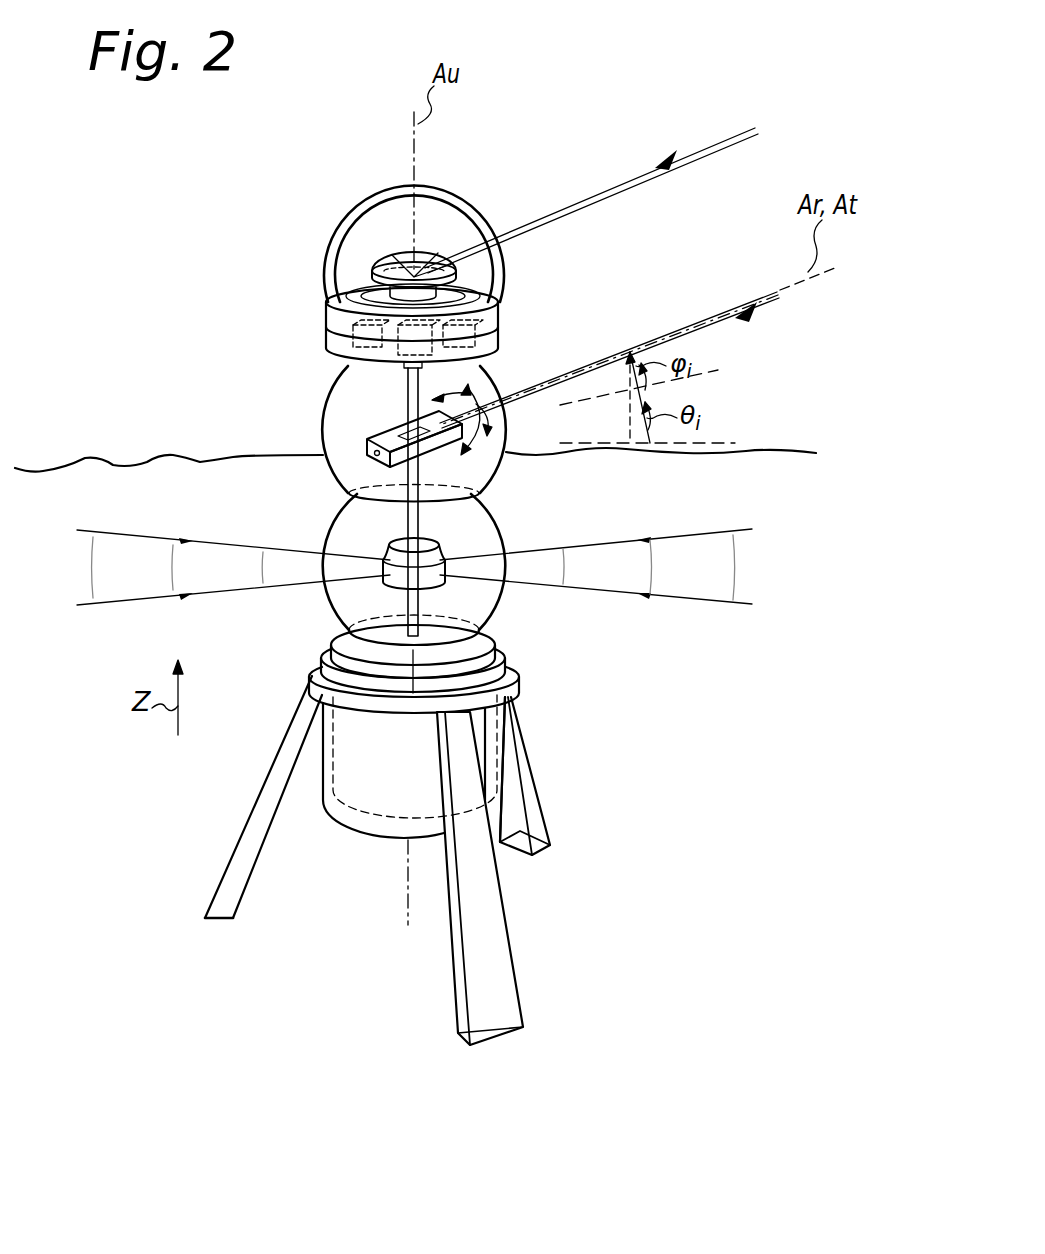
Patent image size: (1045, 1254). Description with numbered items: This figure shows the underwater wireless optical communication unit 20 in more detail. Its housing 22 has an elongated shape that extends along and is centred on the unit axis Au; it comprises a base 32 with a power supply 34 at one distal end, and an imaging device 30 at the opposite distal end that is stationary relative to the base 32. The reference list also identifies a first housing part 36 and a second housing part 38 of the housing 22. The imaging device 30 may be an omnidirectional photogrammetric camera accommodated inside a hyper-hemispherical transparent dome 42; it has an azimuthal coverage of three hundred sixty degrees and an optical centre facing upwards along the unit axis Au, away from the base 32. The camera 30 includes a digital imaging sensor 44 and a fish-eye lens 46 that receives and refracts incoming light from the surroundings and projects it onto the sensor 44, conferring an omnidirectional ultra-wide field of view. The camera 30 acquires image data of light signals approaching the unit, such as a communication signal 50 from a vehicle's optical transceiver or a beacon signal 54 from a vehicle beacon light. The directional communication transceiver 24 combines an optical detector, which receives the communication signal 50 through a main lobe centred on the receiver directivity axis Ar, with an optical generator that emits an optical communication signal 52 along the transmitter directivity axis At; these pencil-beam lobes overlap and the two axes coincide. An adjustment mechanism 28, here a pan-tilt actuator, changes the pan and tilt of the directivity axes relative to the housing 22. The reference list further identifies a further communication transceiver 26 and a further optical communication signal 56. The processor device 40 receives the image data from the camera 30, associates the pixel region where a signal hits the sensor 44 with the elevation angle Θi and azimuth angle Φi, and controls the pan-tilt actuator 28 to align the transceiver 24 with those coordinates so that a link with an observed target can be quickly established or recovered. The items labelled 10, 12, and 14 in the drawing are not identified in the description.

The survey system 10 is at (133, 335).
The ground surface 12 is at (93, 509).
The horizontal plane 14 is at (145, 494).
The underwater wireless optical communication unit 20 is at (493, 134).
The housing 22 is at (347, 836).
The communication transceiver 24 is at (367, 447).
The further communication transceiver 26 is at (437, 553).
The adjustment mechanism 28 is at (396, 420).
The imaging device 30 is at (458, 280).
The base 32 is at (515, 832).
The power supply 34 is at (483, 733).
The first housing part 36 is at (323, 477).
The second housing part 38 is at (322, 534).
The processor device 40 is at (400, 347).
The transparent dome 42 is at (378, 195).
The imaging sensor 44 is at (413, 276).
The fish-eye lens 46 is at (392, 272).
The optical communication signal 50 is at (630, 262).
The optical communication signal 52 is at (756, 299).
The optical beacon signal 54 is at (678, 160).
The further optical communication signal 56 is at (712, 596).